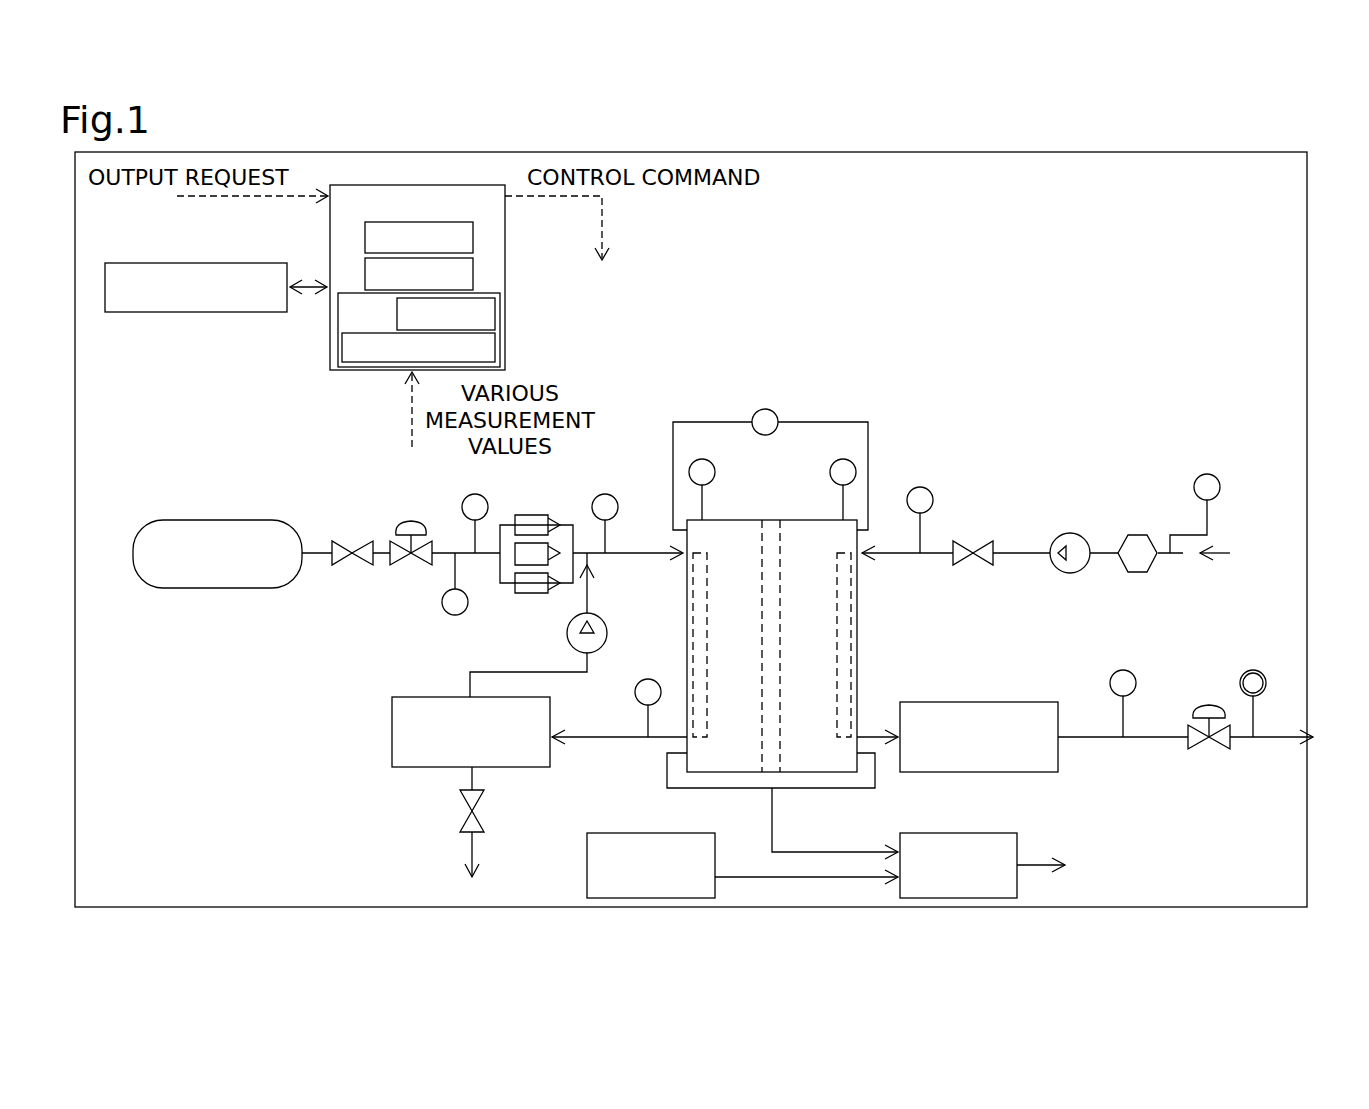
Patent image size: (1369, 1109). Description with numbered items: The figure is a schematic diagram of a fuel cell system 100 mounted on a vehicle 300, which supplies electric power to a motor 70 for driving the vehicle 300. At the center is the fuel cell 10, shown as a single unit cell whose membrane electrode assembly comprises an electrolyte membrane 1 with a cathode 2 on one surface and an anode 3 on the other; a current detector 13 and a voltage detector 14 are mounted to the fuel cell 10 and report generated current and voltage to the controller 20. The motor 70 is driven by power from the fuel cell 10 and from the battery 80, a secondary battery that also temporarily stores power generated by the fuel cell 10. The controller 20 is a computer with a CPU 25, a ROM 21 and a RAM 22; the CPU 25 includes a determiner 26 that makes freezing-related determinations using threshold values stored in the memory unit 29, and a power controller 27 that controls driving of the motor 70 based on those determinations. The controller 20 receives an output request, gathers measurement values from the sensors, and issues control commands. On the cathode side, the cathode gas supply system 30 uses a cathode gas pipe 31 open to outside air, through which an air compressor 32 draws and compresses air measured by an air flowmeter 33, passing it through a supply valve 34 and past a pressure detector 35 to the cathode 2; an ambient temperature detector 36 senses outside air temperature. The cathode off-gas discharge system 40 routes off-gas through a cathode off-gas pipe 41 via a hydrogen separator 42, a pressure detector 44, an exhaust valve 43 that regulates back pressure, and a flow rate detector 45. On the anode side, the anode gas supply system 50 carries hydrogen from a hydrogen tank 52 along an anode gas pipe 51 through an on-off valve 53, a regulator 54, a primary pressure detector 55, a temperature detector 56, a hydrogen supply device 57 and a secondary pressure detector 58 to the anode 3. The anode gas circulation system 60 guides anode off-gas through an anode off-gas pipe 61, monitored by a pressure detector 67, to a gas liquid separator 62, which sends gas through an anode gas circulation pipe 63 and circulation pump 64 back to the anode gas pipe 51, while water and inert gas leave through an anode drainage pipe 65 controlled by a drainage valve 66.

The electrolyte membrane 1 is at (771, 520).
The cathode 2 is at (805, 520).
The anode 3 is at (730, 520).
The fuel cell 10 is at (795, 586).
The current detector 13 is at (713, 462).
The voltage detector 14 is at (775, 413).
The controller 20 is at (412, 266).
The ROM 21 is at (478, 233).
The RAM 22 is at (478, 269).
The CPU 25 is at (336, 315).
The determiner 26 is at (498, 313).
The power controller 27 is at (498, 346).
The memory unit 29 is at (256, 262).
The cathode gas supply system 30 is at (1083, 447).
The cathode gas pipe 31 is at (1010, 548).
The air compressor 32 is at (1076, 535).
The air flowmeter 33 is at (1143, 536).
The supply valve 34 is at (960, 543).
The pressure detector 35 is at (925, 488).
The ambient temperature detector 36 is at (1196, 482).
The cathode off-gas discharge system 40 is at (1060, 784).
The cathode off-gas pipe 41 is at (1275, 735).
The hydrogen separator 42 is at (945, 702).
The exhaust valve 43 is at (1208, 705).
The pressure detector 44 is at (1130, 670).
The flow rate detector 45 is at (1258, 670).
The anode gas supply system 50 is at (292, 455).
The anode gas pipe 51 is at (594, 551).
The hydrogen tank 52 is at (244, 520).
The on-off valve 53 is at (367, 542).
The regulator 54 is at (411, 521).
The primary pressure detector 55 is at (470, 495).
The temperature detector 56 is at (446, 615).
The hydrogen supply device 57 is at (532, 520).
The secondary pressure detector 58 is at (619, 497).
The anode gas circulation system 60 is at (373, 713).
The anode off-gas pipe 61 is at (592, 745).
The gas liquid separator 62 is at (446, 697).
The anode gas circulation pipe 63 is at (536, 672).
The circulation pump 64 is at (567, 633).
The anode drainage pipe 65 is at (462, 852).
The drainage valve 66 is at (462, 811).
The pressure detector 67 is at (652, 680).
The motor 70 is at (945, 832).
The battery 80 is at (645, 833).
The fuel cell system 100 is at (1068, 342).
The vehicle 300 is at (512, 153).